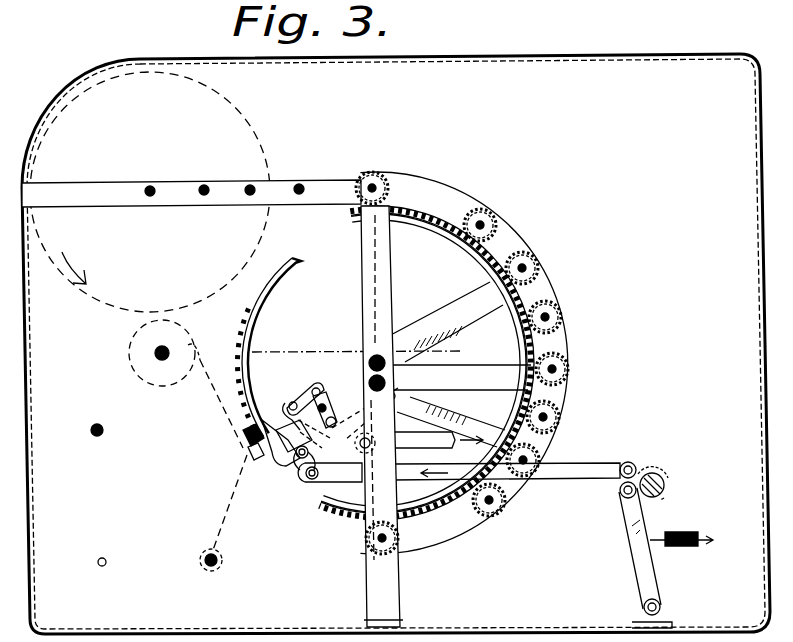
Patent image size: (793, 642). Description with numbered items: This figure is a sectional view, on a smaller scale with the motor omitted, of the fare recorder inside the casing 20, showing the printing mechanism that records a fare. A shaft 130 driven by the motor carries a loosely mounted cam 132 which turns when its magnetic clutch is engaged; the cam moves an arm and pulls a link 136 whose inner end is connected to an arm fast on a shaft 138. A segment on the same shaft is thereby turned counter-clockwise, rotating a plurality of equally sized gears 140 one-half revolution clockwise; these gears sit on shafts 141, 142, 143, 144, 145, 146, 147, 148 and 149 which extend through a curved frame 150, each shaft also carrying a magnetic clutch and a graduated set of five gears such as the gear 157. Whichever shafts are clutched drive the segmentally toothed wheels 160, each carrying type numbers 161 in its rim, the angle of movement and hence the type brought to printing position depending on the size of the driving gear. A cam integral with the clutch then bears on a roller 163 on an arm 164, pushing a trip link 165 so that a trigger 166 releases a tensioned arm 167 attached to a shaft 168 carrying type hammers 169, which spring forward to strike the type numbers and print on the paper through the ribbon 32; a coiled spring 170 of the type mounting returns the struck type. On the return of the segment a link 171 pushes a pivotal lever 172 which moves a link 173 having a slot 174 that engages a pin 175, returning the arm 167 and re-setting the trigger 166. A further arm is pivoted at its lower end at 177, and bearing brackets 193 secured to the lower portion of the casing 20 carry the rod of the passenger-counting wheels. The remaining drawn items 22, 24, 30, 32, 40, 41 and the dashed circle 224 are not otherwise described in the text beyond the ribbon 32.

The casing 20 is at (570, 56).
The shaft 22 is at (455, 337).
The stud 24 is at (102, 433).
The pulley 30 is at (130, 345).
The ribbon 32 is at (240, 500).
The pin 40 is at (107, 563).
The pivot 41 is at (216, 567).
The shaft 130 is at (652, 472).
The cam 132 is at (663, 496).
The link 136 is at (448, 446).
The shaft 138 is at (393, 340).
The gears 140 is at (475, 365).
The shaft 141 is at (384, 187).
The shaft 142 is at (490, 225).
The shaft 143 is at (532, 268).
The shaft 144 is at (555, 318).
The shaft 145 is at (560, 370).
The shaft 146 is at (553, 420).
The shaft 147 is at (529, 466).
The shaft 148 is at (491, 507).
The shaft 149 is at (388, 545).
The curved frame 150 is at (446, 193).
The gear 157 is at (356, 445).
The segmentally toothed wheel 160 is at (360, 363).
The type numbers 161 is at (270, 288).
The roller 163 is at (620, 496).
The arm 164 is at (636, 560).
The trip link 165 is at (615, 446).
The trigger 166 is at (306, 484).
The arm 167 is at (284, 404).
The shaft 168 is at (292, 480).
The type hammers 169 is at (260, 458).
The coiled spring 170 is at (268, 420).
The link 171 is at (331, 405).
The pivotal lever 172 is at (318, 386).
The link 173 is at (304, 400).
The slot 174 is at (292, 398).
The pin 175 is at (290, 440).
The pivot 177 is at (662, 607).
The bearing brackets 193 is at (236, 0).
The path circle 224 is at (256, 138).